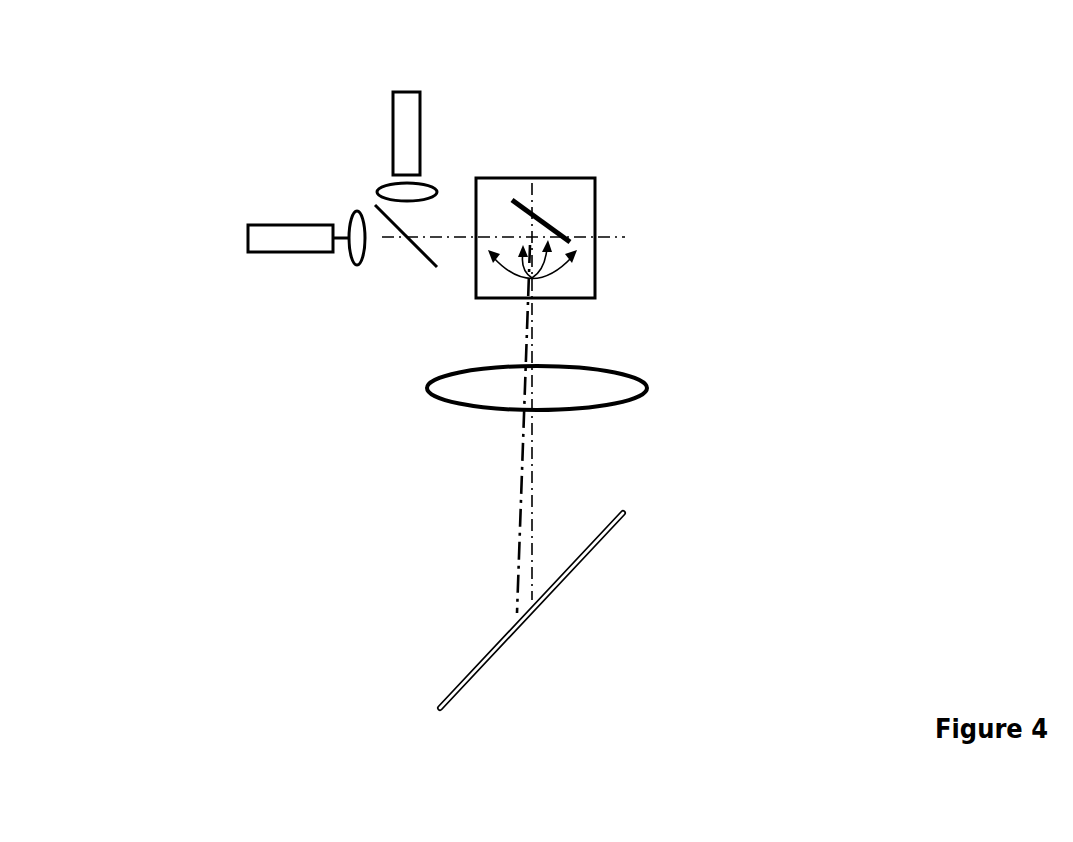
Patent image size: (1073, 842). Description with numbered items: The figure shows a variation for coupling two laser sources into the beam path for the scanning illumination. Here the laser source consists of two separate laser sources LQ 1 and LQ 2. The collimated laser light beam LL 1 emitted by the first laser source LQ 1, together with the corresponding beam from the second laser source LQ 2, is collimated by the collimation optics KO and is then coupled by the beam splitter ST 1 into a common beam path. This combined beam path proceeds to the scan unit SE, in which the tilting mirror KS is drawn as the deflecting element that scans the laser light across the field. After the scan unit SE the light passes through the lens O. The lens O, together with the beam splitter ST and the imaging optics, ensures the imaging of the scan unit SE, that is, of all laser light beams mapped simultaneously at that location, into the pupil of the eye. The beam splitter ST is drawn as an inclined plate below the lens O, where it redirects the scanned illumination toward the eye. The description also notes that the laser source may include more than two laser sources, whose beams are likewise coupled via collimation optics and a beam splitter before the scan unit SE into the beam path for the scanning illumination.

The laser source LQ 1 is at (248, 235).
The laser source LQ 2 is at (406, 92).
The collimated laser light beam LL 1 is at (344, 256).
The collimation optics KO is at (388, 184).
The scan unit SE is at (573, 178).
The tilting mirror KS is at (557, 224).
The lens O is at (650, 388).
The beam splitter ST is at (624, 516).
The beam splitter ST 1 is at (427, 258).